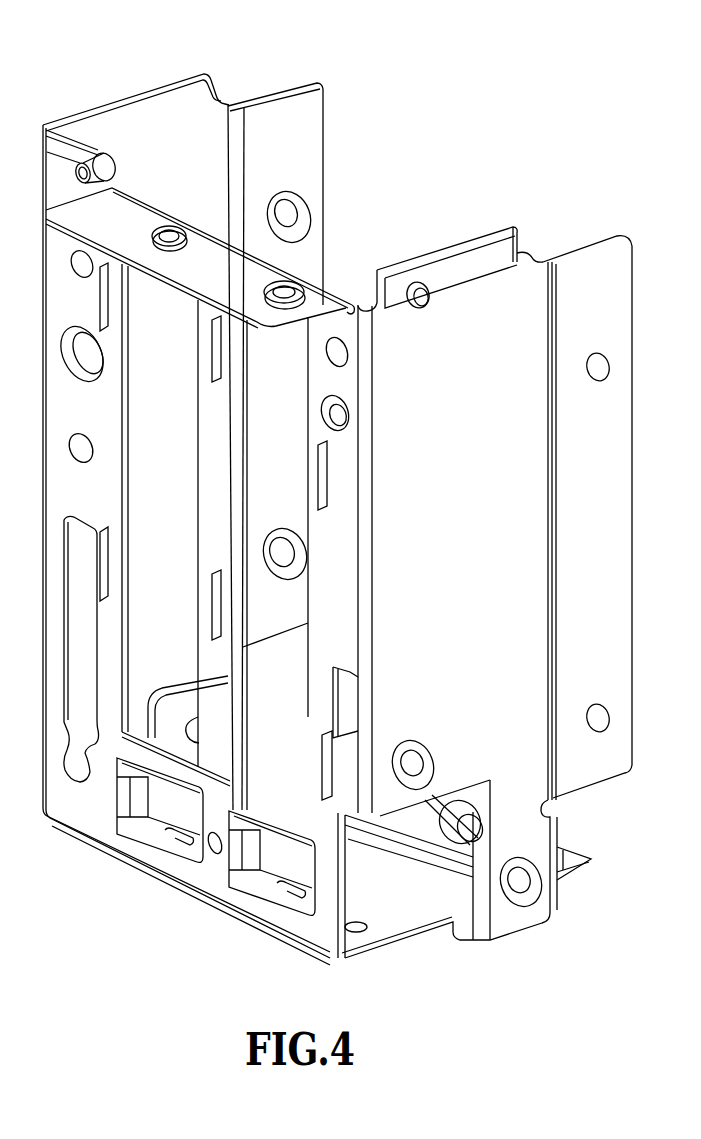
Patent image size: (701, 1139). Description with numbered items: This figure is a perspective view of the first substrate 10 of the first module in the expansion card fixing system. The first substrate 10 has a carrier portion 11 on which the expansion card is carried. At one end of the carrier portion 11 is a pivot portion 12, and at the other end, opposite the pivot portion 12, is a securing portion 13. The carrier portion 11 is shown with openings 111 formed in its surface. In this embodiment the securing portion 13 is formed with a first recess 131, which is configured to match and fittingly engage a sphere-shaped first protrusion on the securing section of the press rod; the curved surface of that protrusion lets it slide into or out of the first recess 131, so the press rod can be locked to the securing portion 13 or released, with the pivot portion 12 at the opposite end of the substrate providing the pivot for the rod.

The first substrate 10 is at (108, 91).
The carrier portion 11 is at (222, 273).
The mounting holes 111 is at (178, 230).
The pivot portion 12 is at (98, 177).
The securing portion 13 is at (468, 256).
The first recess 131 is at (421, 313).